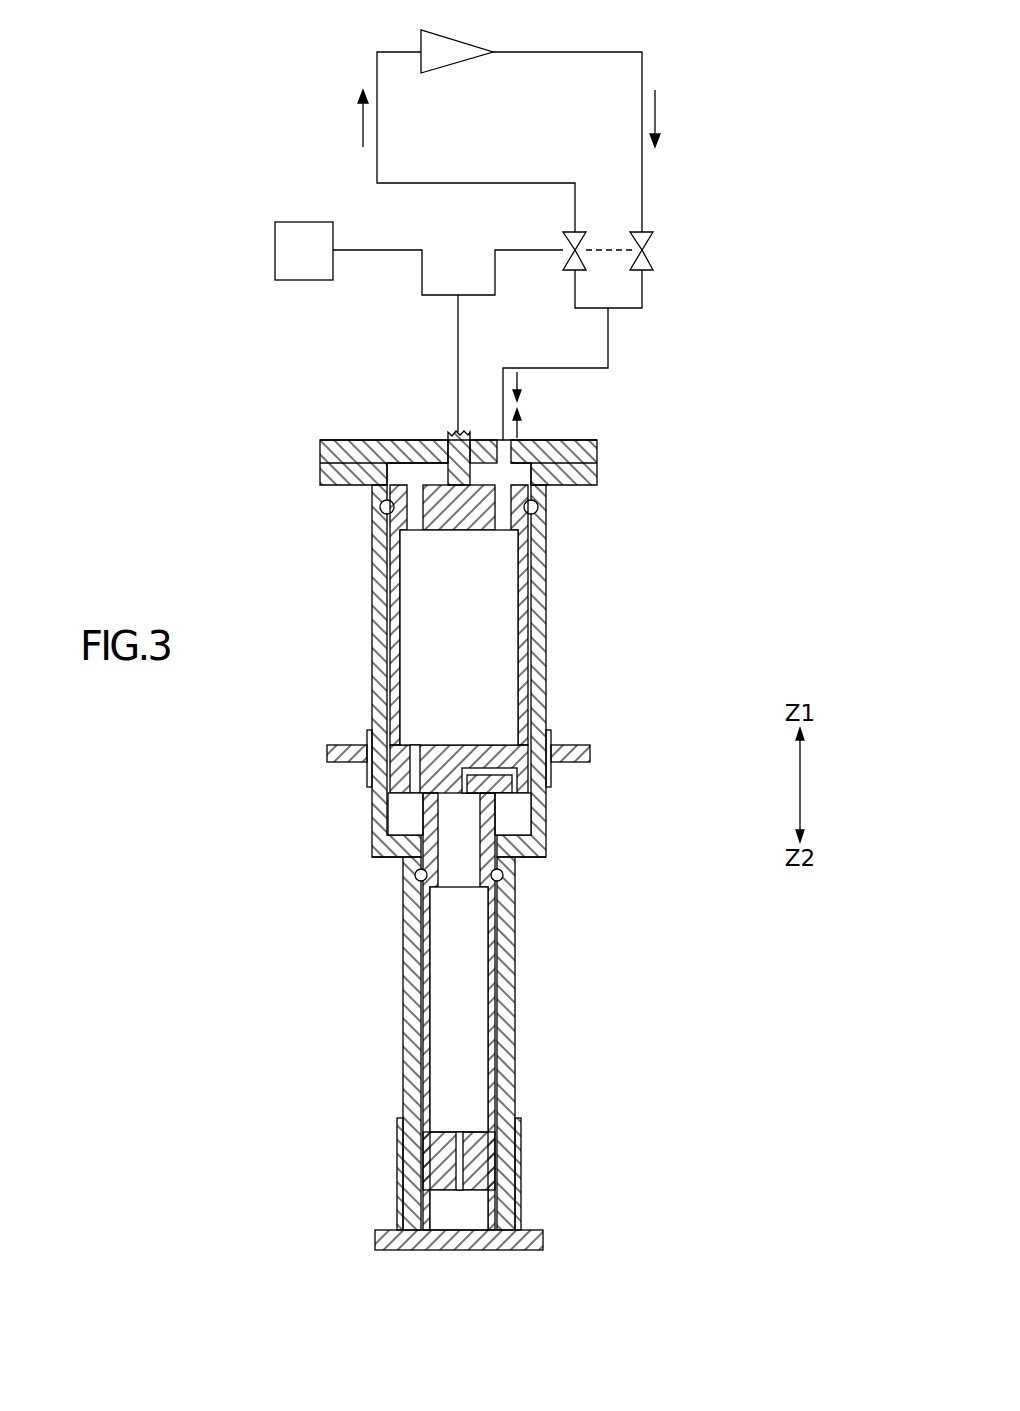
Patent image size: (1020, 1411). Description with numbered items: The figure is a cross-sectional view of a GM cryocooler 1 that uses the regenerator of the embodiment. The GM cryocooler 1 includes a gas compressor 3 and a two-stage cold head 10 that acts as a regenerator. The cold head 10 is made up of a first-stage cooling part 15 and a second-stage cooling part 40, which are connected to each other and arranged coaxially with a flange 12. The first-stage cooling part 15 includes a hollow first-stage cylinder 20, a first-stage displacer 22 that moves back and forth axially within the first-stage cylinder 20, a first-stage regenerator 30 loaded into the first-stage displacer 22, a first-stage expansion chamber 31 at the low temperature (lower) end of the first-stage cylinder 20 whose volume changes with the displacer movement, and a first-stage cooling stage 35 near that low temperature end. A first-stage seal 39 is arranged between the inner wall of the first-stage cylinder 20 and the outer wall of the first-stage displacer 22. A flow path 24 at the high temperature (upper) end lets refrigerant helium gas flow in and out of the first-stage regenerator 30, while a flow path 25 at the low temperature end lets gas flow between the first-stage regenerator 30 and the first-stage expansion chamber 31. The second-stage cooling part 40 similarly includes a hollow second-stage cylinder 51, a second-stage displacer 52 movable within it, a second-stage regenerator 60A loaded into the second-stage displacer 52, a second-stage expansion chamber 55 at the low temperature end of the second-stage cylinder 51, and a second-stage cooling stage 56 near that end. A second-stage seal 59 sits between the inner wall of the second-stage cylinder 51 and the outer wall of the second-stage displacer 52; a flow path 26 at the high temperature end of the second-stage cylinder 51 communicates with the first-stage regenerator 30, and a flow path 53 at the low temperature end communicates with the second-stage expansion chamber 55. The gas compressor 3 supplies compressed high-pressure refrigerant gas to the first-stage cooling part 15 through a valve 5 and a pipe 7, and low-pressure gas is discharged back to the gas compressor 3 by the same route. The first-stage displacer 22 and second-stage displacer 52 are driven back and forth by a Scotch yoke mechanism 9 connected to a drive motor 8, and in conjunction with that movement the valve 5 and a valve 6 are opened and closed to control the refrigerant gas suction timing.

The GM cryocooler 1 is at (215, 42).
The gas compressor 3 is at (446, 36).
The valve 5 is at (648, 232).
The valve 6 is at (581, 232).
The pipe 7 is at (608, 333).
The drive motor 8 is at (303, 222).
The Scotch yoke mechanism 9 is at (462, 262).
The two-stage cold head 10 is at (306, 423).
The flange 12 is at (597, 452).
The first-stage cooling part 15 is at (248, 558).
The first-stage cylinder 20 is at (372, 600).
The first-stage displacer 22 is at (523, 587).
The flow path 24 is at (505, 497).
The flow path 25 is at (412, 748).
The flow path 26 is at (510, 768).
The first-stage regenerator 30 is at (497, 640).
The first-stage expansion chamber 31 is at (513, 818).
The first-stage cooling stage 35 is at (552, 778).
The first-stage seal 39 is at (380, 507).
The second-stage cooling part 40 is at (250, 885).
The second-stage cylinder 51 is at (420, 990).
The second-stage displacer 52 is at (513, 950).
The flow path 53 is at (460, 1192).
The second-stage expansion chamber 55 is at (478, 1203).
The second-stage cooling stage 56 is at (543, 1240).
The second-stage seal 59 is at (415, 878).
The second-stage regenerator 60A is at (480, 1015).